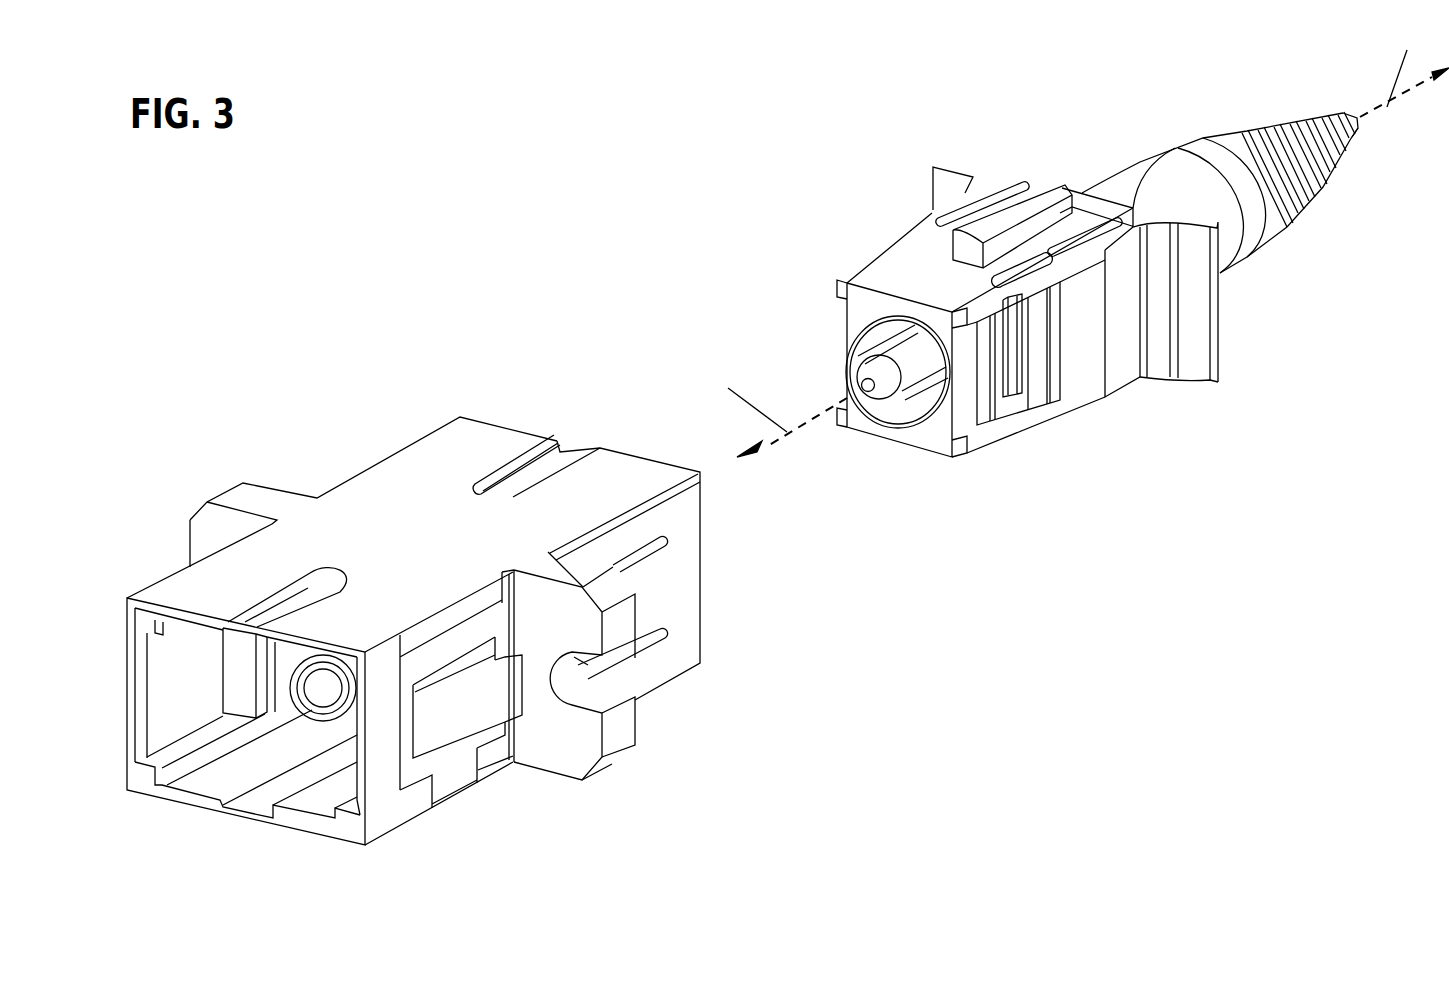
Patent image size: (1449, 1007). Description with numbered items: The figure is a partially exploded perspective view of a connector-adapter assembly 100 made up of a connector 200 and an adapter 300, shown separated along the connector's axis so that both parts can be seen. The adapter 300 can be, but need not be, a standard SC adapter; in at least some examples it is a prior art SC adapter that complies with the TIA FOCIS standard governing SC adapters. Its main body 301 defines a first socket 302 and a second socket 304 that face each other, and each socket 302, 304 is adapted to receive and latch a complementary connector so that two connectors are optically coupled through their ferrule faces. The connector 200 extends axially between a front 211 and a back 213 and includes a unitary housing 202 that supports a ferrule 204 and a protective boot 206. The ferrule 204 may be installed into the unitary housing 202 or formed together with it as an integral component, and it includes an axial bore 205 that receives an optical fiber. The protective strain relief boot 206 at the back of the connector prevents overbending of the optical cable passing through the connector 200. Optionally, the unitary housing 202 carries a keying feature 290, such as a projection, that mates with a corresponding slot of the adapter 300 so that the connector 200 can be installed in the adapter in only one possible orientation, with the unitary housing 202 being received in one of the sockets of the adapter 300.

The connector-adapter assembly 100 is at (548, 238).
The connector 200 is at (1063, 157).
The unitary housing 202 is at (912, 282).
The ferrule 204 is at (923, 377).
The axial bore 205 is at (870, 385).
The protective boot 206 is at (1163, 175).
The front 211 is at (870, 389).
The back 213 is at (1342, 112).
The keying feature 290 is at (1028, 203).
The adapter 300 is at (368, 432).
The main body 301 is at (355, 508).
The first socket 302 is at (215, 772).
The second socket 304 is at (718, 578).